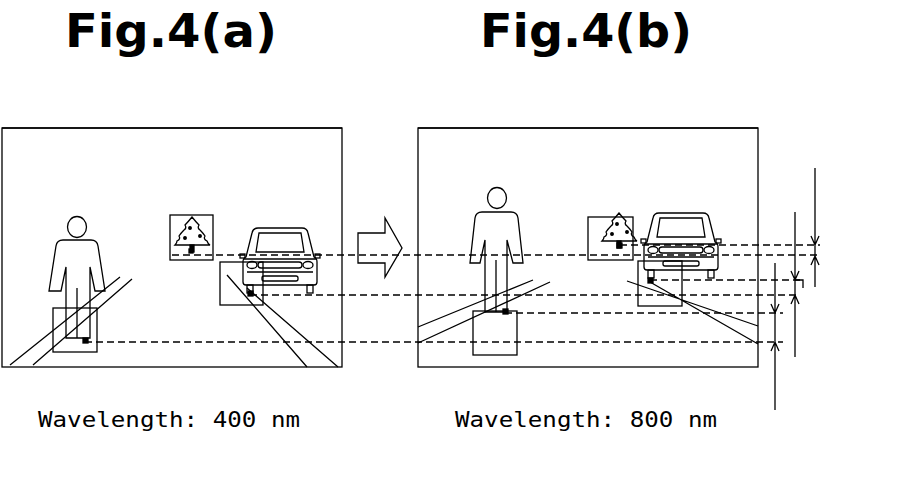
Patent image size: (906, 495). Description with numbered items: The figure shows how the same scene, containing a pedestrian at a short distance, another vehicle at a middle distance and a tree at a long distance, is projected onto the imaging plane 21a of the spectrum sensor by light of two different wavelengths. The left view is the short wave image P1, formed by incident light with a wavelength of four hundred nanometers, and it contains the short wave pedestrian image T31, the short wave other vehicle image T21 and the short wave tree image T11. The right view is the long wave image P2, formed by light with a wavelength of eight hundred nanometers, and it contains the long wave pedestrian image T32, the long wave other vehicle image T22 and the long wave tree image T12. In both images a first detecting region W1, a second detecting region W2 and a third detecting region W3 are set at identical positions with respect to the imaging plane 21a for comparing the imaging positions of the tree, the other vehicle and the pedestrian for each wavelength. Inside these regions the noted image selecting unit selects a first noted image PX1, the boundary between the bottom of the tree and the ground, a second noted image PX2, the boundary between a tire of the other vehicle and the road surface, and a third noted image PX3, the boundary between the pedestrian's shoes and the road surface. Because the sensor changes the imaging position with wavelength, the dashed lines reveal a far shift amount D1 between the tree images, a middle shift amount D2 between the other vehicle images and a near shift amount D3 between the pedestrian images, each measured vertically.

In FIG. 4A, the imaging plane 21a is at (227, 137).
In FIG. 4B, the imaging plane 21a is at (645, 140).
In FIG. 4A, the short wave image P1 is at (305, 128).
In FIG. 4B, the long wave image P2 is at (723, 128).
In FIG. 4A, the short wave pedestrian image T31 is at (85, 216).
In FIG. 4B, the long wave pedestrian image T32 is at (502, 188).
In FIG. 4A, the short wave tree image T11 is at (202, 220).
In FIG. 4B, the long wave tree image T12 is at (628, 214).
In FIG. 4A, the short wave other vehicle image T21 is at (283, 228).
In FIG. 4B, the long wave other vehicle image T22 is at (720, 202).
In FIG. 4A, the first detecting region W1 is at (172, 215).
In FIG. 4B, the first detecting region W1 is at (589, 217).
In FIG. 4A, the second detecting region W2 is at (220, 284).
In FIG. 4B, the second detecting region W2 is at (638, 284).
In FIG. 4A, the third detecting region W3 is at (98, 327).
In FIG. 4B, the third detecting region W3 is at (517, 328).
In FIG. 4A, the first noted image PX1 is at (189, 251).
In FIG. 4B, the first noted image PX1 is at (617, 245).
In FIG. 4A, the second noted image PX2 is at (250, 296).
In FIG. 4B, the second noted image PX2 is at (651, 283).
In FIG. 4A, the third noted image PX3 is at (85, 343).
In FIG. 4B, the third noted image PX3 is at (505, 313).
In FIG. 4B, the far shift amount D1 is at (831, 227).
In FIG. 4B, the middle shift amount D2 is at (812, 284).
In FIG. 4B, the near shift amount D3 is at (792, 336).